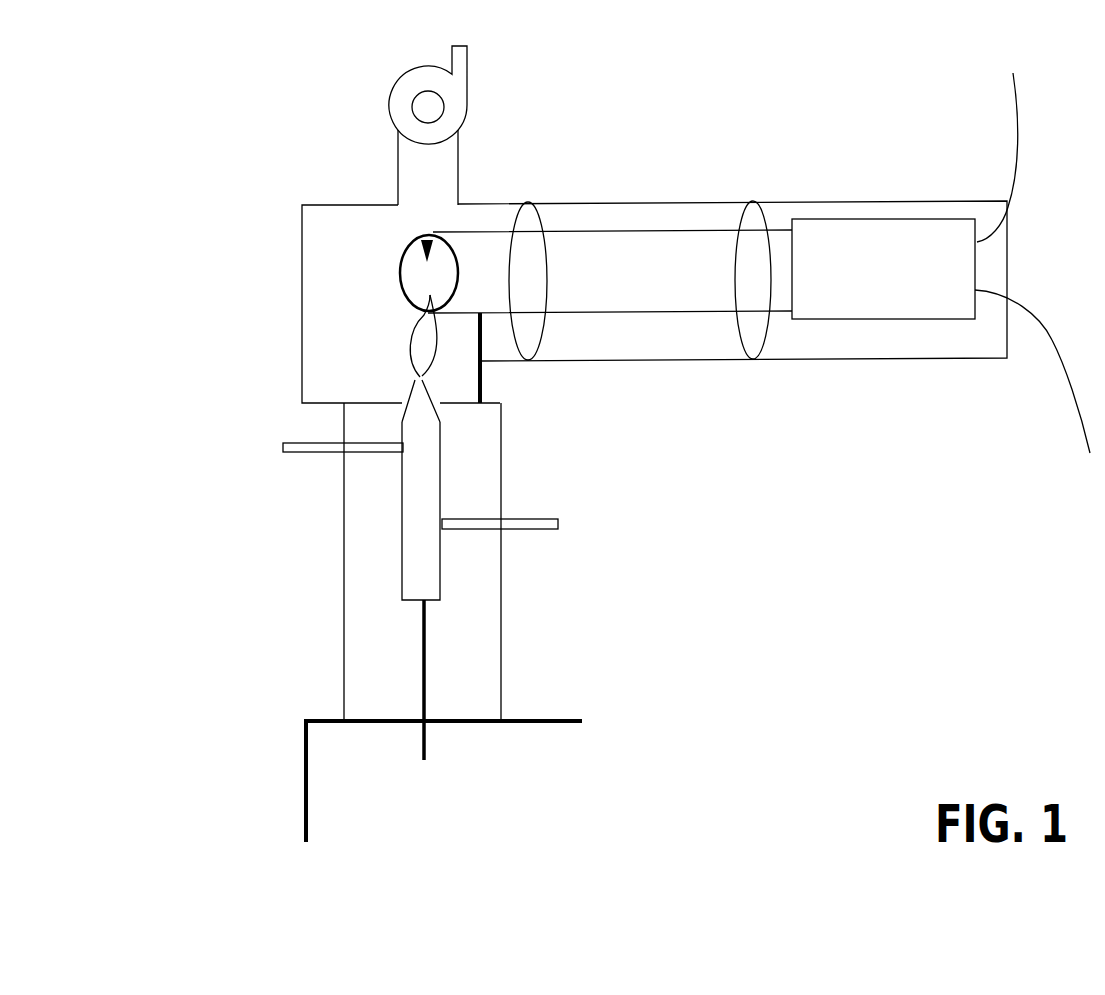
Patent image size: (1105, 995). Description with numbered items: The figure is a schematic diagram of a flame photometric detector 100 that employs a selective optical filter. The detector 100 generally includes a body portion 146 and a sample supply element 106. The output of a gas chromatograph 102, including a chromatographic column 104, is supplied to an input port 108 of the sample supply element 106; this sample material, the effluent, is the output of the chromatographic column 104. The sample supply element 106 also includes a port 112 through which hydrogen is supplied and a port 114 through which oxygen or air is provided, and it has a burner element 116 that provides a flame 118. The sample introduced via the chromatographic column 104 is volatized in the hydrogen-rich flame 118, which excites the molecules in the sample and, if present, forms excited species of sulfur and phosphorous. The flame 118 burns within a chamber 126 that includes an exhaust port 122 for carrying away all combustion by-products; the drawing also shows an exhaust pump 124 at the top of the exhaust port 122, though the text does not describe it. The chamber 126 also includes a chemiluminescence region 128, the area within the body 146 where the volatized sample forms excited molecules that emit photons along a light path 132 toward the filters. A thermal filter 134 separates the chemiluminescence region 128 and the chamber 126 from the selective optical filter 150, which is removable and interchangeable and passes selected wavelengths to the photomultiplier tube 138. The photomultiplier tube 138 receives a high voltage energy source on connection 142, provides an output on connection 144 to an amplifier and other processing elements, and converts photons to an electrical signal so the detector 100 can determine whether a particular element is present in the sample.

The flame photometric detector 100 is at (303, 66).
The gas chromatograph 102 is at (304, 766).
The chromatographic column 104 is at (426, 732).
The sample supply element 106 is at (343, 500).
The input port 108 is at (421, 557).
The port 112 is at (527, 519).
The port 114 is at (312, 443).
The burner element 116 is at (413, 381).
The flame 118 is at (388, 325).
The exhaust port 122 is at (430, 193).
The exhaust pump 124 is at (468, 107).
The chamber 126 is at (336, 227).
The chemiluminescence region 128 is at (418, 238).
The light path 132 is at (484, 285).
The thermal filter 134 is at (528, 202).
The photomultiplier tube 138 is at (847, 310).
The connection 142 is at (1018, 127).
The connection 144 is at (1070, 367).
The body portion 146 is at (643, 361).
The selective optical filter 150 is at (753, 201).